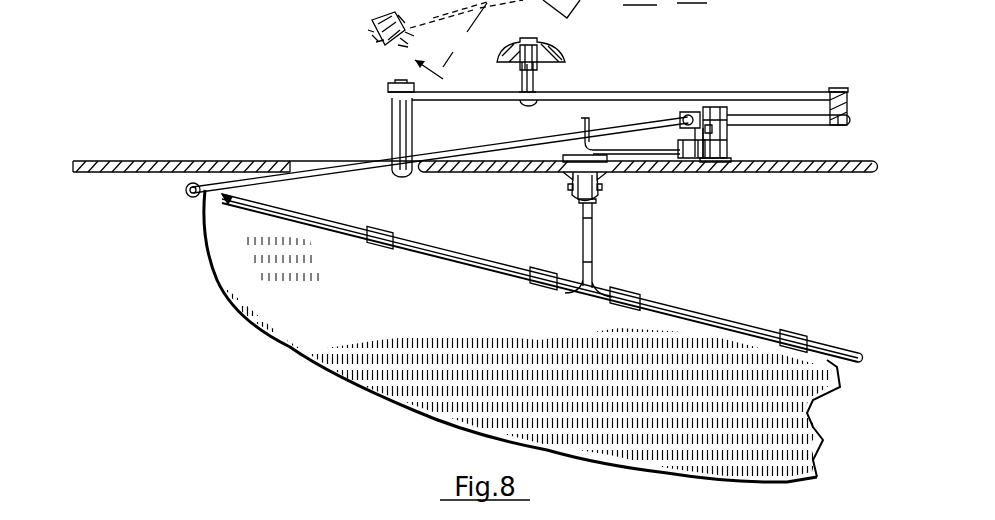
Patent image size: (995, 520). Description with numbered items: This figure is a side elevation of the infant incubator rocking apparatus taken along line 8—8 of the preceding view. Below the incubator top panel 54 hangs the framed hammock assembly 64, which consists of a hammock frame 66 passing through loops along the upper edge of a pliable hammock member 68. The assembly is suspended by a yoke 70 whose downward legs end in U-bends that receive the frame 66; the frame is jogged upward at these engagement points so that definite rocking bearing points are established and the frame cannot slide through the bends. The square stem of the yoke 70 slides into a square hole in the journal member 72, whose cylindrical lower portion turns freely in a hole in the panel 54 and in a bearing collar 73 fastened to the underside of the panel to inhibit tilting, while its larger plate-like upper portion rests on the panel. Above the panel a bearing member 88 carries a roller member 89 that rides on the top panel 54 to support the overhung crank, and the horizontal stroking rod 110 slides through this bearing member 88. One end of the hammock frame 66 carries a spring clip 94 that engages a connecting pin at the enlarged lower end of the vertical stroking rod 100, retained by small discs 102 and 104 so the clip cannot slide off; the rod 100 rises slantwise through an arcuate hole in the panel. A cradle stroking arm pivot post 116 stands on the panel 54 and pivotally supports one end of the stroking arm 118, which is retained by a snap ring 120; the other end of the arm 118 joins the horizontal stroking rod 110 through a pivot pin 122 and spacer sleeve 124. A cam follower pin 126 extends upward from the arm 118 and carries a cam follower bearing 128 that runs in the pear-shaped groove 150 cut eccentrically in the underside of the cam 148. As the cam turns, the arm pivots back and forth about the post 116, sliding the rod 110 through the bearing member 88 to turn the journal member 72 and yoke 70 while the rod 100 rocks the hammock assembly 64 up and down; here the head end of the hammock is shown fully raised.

The top panel 54 is at (213, 161).
The framed hammock assembly 64 is at (262, 342).
The hammock frame 66 is at (446, 250).
The hammock member 68 is at (372, 398).
The yoke 70 is at (592, 231).
The journal member 72 is at (581, 203).
The bearing collar 73 is at (602, 188).
The bearing member 88 is at (727, 136).
The roller member 89 is at (722, 168).
The spring clip 94 is at (375, 20).
The vertical stroking rod 100 is at (483, 144).
The disc 102 is at (378, 35).
The disc 104 is at (405, 40).
The horizontal stroking rod 110 is at (806, 126).
The cradle stroking arm pivot post 116 is at (392, 122).
The stroking arm 118 is at (648, 92).
The snap ring 120 is at (388, 88).
The pivot pin 122 is at (838, 88).
The spacer sleeve 124 is at (850, 100).
The cam follower pin 126 is at (540, 80).
The cam follower bearing 128 is at (520, 72).
The cam 148 is at (556, 48).
The groove 150 is at (523, 44).
The line 8— 8 is at (422, 63).